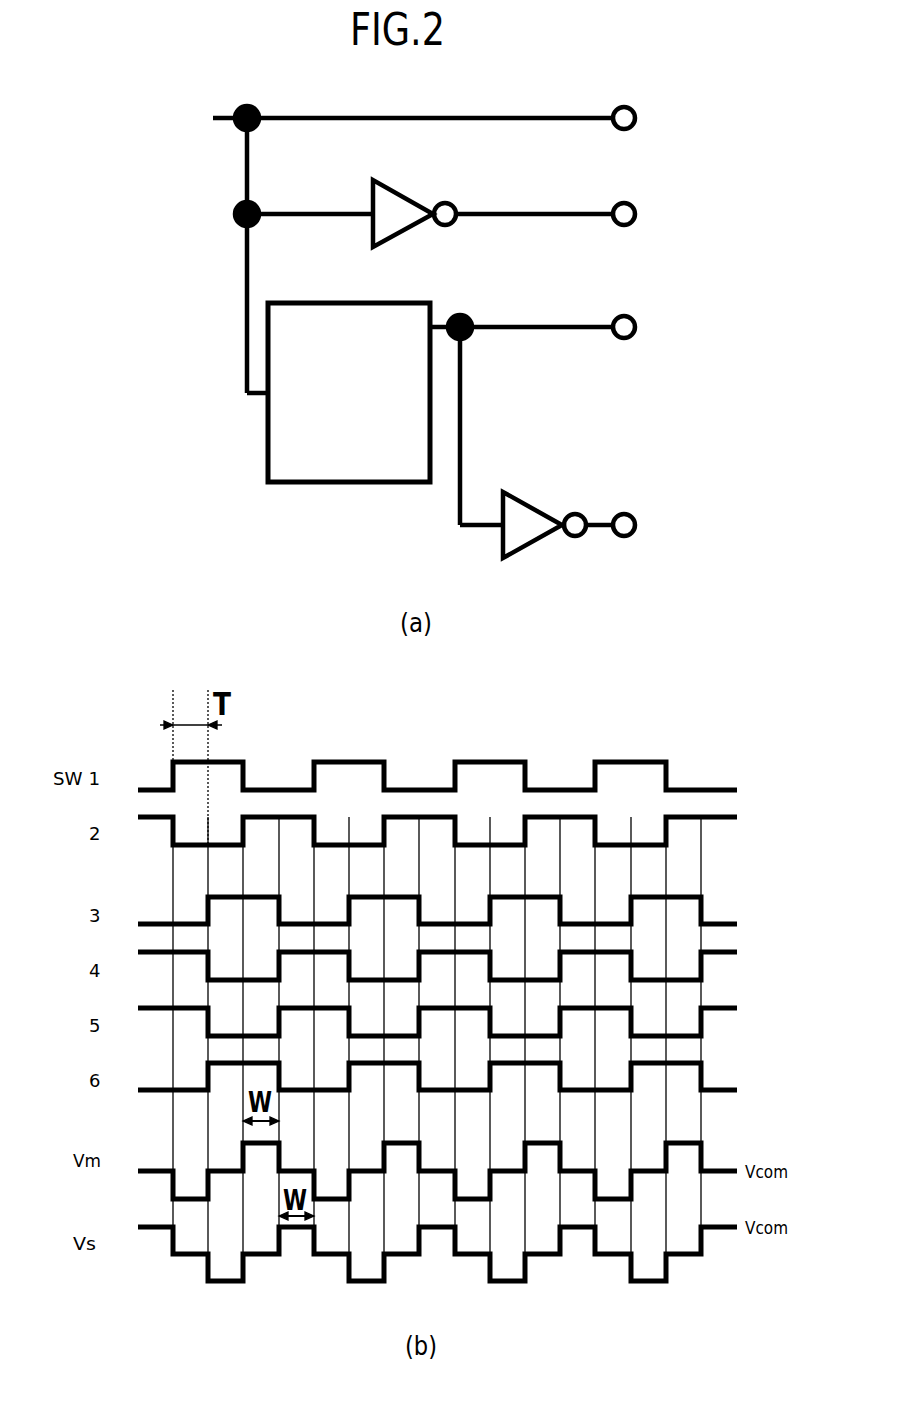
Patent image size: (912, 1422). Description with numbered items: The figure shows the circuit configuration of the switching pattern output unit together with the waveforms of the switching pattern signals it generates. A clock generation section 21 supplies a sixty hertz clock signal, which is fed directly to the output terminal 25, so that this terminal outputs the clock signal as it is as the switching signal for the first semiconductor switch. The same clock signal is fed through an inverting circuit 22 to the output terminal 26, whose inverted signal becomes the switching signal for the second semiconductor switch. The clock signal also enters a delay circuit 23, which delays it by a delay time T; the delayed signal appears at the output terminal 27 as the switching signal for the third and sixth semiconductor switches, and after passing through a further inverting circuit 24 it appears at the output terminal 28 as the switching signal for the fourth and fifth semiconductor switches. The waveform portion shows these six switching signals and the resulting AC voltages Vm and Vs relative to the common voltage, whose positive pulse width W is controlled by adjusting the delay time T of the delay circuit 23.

The clock generation section 21 is at (149, 81).
The inverting circuit 22 is at (417, 186).
The delay circuit 23 is at (349, 436).
The inverting circuit 24 is at (544, 492).
The output terminal 25 is at (661, 78).
The output terminal 26 is at (661, 184).
The output terminal 27 is at (670, 300).
The output terminal 28 is at (670, 485).